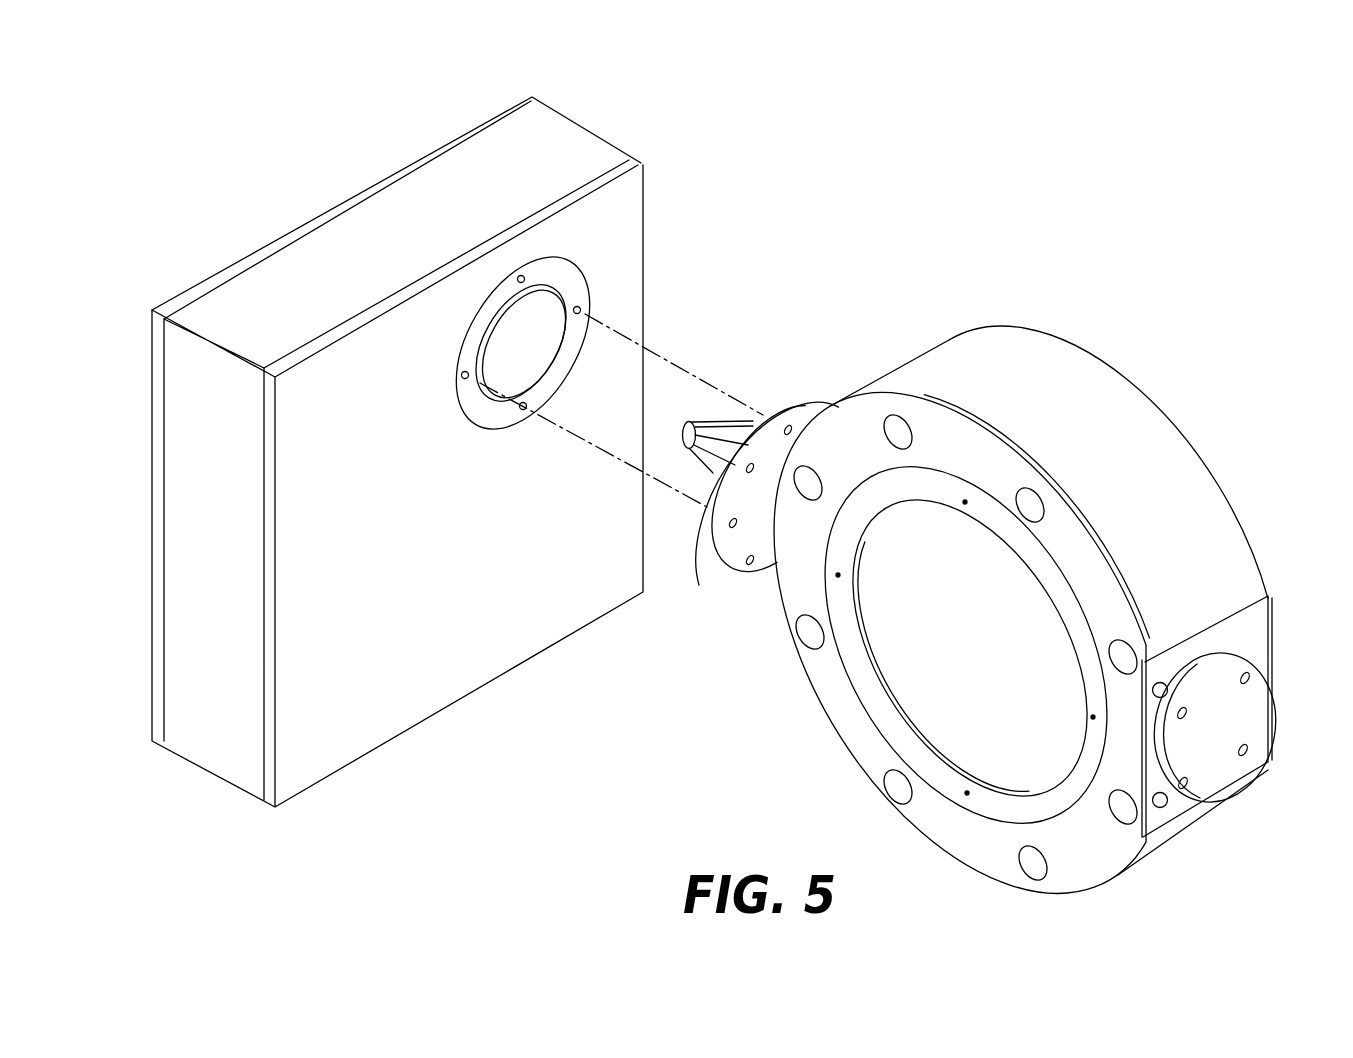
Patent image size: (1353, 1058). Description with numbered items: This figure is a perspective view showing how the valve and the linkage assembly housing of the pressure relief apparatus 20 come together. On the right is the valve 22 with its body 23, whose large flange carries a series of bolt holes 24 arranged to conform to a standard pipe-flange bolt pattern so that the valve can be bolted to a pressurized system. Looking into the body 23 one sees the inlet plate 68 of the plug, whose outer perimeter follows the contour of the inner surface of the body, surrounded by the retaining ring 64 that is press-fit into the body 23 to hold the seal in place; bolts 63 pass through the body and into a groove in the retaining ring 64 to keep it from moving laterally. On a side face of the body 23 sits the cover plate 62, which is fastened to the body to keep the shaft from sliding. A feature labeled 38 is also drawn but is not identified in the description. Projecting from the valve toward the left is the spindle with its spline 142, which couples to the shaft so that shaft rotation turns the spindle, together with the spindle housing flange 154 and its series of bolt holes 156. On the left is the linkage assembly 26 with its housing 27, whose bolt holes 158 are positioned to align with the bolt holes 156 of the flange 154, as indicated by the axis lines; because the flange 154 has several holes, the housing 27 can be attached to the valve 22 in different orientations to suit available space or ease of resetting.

The pressure relief apparatus 20 is at (1009, 496).
The valve 22 is at (1051, 609).
The body 23 is at (1238, 697).
The bolt holes 24 is at (900, 428).
The linkage assembly 26 is at (401, 436).
The housing 27 is at (472, 165).
The bore 38 is at (872, 669).
The cover plate 62 is at (1238, 740).
The bolts 63 is at (1162, 684).
The retaining ring 64 is at (893, 728).
The inlet plate 68 is at (933, 650).
The spline 142 is at (703, 432).
The flange 154 is at (769, 467).
The bolt holes 156 is at (749, 560).
The bolt holes 158 is at (521, 275).